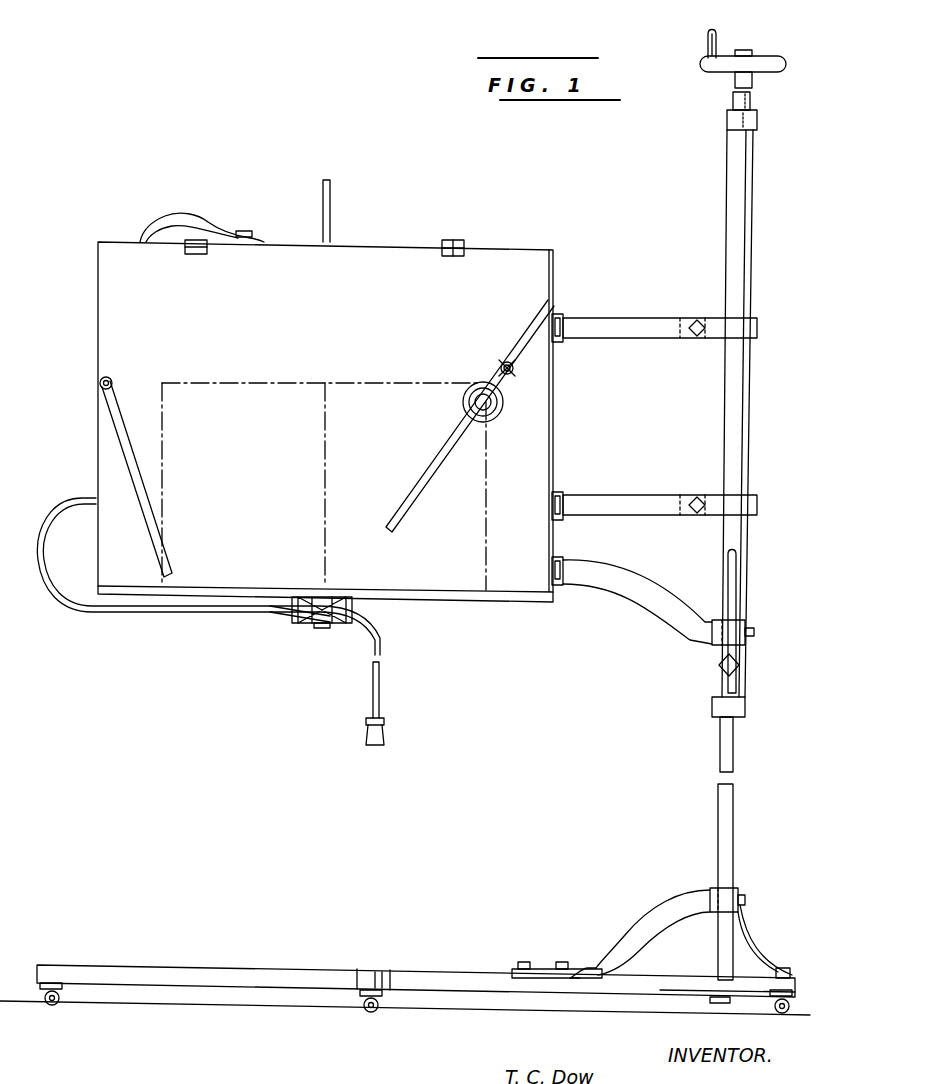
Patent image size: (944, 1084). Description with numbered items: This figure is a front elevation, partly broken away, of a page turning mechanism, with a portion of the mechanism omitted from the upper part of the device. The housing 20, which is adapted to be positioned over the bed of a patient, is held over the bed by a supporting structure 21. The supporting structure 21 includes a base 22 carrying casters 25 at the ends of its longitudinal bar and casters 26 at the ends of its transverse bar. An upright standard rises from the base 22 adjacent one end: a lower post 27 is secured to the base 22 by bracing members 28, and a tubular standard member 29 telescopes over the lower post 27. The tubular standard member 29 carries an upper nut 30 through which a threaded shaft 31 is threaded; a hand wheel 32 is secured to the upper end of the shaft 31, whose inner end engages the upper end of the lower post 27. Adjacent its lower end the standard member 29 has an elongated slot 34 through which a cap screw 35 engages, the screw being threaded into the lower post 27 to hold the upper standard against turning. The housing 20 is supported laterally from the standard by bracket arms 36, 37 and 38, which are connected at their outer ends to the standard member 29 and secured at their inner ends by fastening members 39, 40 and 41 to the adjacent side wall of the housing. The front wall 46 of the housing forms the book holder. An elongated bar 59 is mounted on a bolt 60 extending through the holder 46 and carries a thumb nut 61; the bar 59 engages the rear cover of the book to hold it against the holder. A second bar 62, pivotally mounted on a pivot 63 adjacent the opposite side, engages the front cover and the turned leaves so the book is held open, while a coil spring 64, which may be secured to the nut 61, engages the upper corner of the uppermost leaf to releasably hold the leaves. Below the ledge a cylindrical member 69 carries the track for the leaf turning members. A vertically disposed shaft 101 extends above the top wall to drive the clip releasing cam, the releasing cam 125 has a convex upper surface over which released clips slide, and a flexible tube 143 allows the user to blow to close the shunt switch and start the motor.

The housing 20 is at (503, 582).
The supporting structure 21 is at (716, 739).
The base 22 is at (440, 966).
The casters 25 is at (60, 1002).
The casters 26 is at (366, 1014).
The lower post 27 is at (718, 816).
The bracing members 28 is at (652, 935).
The tubular standard member 29 is at (742, 460).
The upper nut 30 is at (729, 122).
The threaded shaft 31 is at (733, 100).
The hand wheel 32 is at (772, 58).
The elongated slot 34 is at (736, 578).
The cap screw 35 is at (740, 664).
The bracket arm 36 is at (640, 316).
The bracket arm 37 is at (640, 494).
The bracket arm 38 is at (622, 572).
The fastening member 39 is at (563, 316).
The fastening member 40 is at (565, 492).
The fastening member 41 is at (565, 558).
The front wall 46 is at (324, 486).
The elongated bar 59 is at (450, 450).
The bolt 60 is at (500, 367).
The thumb nut 61 is at (516, 369).
The second bar 62 is at (125, 454).
The pivot 63 is at (99, 386).
The coil spring 64 is at (492, 418).
The cylindrical member 69 is at (333, 628).
The vertically disposed shaft 101 is at (327, 180).
The releasing cam 125 is at (160, 226).
The flexible tube 143 is at (382, 700).